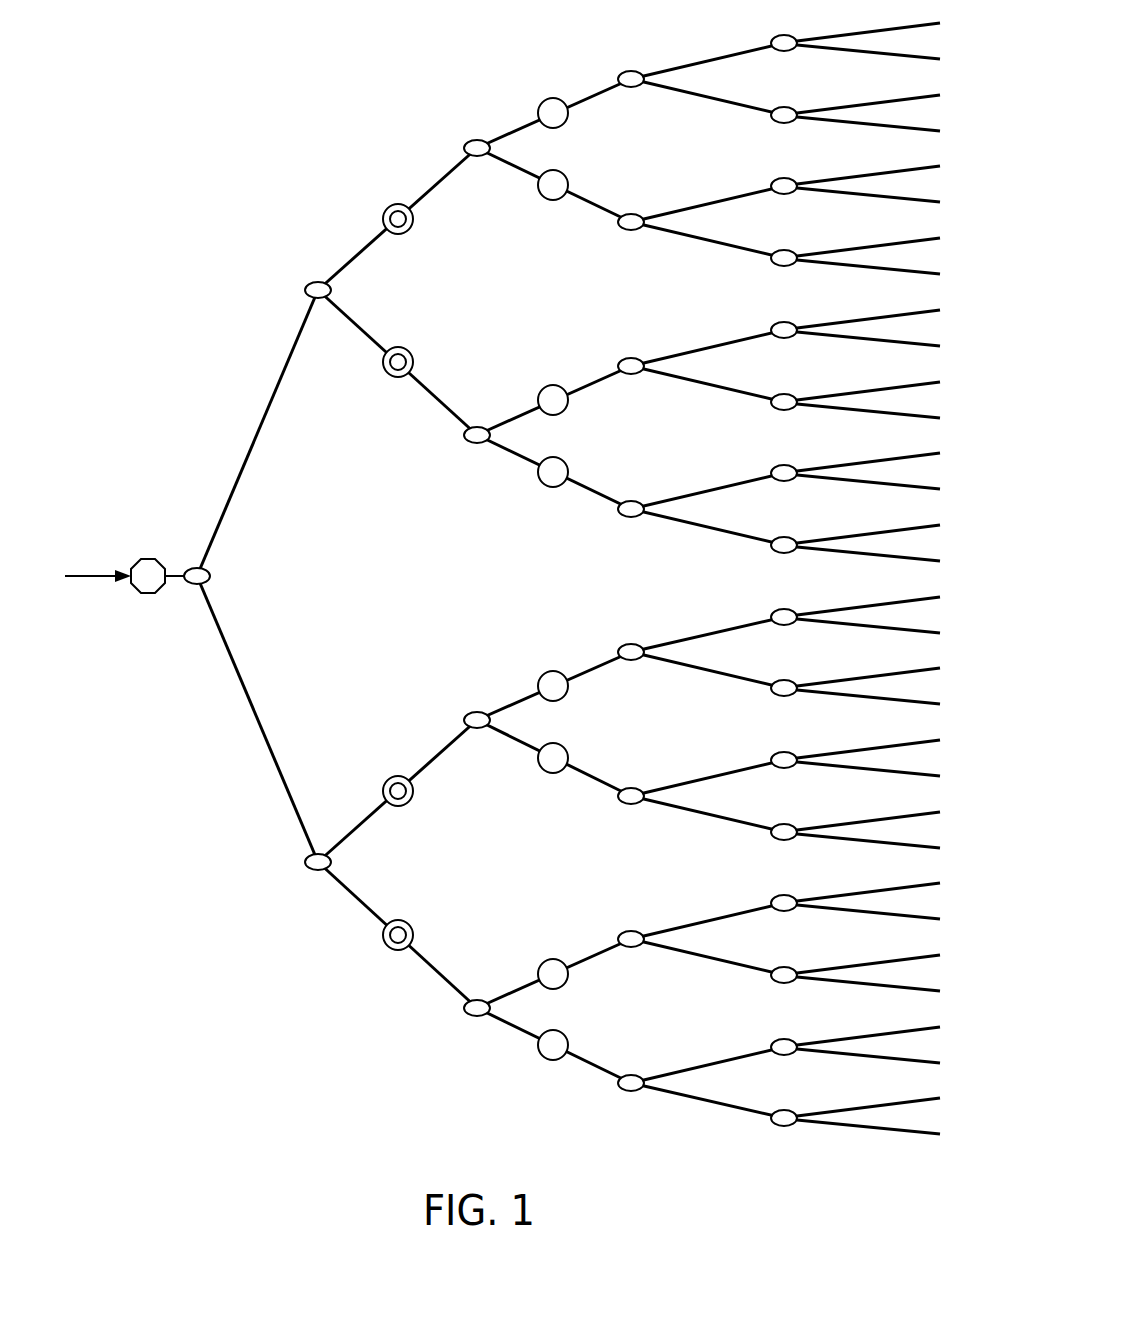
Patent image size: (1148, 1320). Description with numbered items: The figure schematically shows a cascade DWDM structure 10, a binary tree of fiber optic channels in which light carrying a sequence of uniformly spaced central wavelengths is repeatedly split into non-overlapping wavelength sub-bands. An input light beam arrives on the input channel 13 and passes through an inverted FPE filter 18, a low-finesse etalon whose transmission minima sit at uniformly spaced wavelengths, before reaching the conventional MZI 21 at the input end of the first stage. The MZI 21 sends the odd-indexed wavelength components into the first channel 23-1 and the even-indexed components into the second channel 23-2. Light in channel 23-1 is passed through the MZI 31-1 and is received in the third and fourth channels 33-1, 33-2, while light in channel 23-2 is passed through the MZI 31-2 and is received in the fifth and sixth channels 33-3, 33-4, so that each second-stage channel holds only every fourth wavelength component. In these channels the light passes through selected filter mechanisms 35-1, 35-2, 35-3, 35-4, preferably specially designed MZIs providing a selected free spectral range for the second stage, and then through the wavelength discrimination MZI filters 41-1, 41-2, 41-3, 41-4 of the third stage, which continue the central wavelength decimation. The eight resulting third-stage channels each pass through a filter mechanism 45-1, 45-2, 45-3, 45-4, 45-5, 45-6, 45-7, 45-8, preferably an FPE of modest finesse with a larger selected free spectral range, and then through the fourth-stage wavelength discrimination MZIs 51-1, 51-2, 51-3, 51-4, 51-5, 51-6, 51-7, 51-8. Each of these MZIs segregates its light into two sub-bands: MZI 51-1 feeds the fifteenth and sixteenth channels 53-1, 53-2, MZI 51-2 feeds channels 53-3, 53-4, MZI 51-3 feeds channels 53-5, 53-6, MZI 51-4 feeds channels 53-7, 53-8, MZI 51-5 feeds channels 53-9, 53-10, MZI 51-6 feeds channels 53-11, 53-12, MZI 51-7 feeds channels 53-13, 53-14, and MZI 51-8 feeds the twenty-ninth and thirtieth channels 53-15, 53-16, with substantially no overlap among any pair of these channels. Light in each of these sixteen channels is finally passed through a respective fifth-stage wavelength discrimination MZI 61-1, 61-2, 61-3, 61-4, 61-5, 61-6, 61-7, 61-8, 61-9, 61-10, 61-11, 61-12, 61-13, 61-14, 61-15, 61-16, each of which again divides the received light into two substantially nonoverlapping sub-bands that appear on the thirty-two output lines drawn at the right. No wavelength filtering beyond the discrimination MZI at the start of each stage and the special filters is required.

The cascade DWDM structure 10 is at (214, 180).
The input channel 13 is at (93, 581).
The inverted FPE filter 18 is at (148, 582).
The MZI 21 is at (211, 576).
The first channel 23-1 is at (258, 710).
The second channel 23-2 is at (258, 436).
The MZI 31-1 is at (320, 854).
The MZI 31-2 is at (318, 282).
The third channel 33-1 is at (442, 977).
The fourth channel 33-2 is at (440, 752).
The fifth channel 33-3 is at (433, 400).
The sixth channel 33-4 is at (440, 181).
The filter mechanism 35-1 is at (450, 910).
The filter mechanism 35-2 is at (413, 797).
The filter mechanism 35-3 is at (448, 335).
The filter mechanism 35-4 is at (405, 222).
The wavelength discrimination MZI filter 41-1 is at (477, 1000).
The wavelength discrimination MZI filter 41-2 is at (477, 712).
The wavelength discrimination MZI filter 41-3 is at (477, 427).
The wavelength discrimination MZI filter 41-4 is at (477, 140).
The filter mechanism 45-1 is at (553, 1048).
The filter mechanism 45-2 is at (553, 971).
The filter mechanism 45-3 is at (553, 761).
The filter mechanism 45-4 is at (553, 683).
The filter mechanism 45-5 is at (553, 475).
The filter mechanism 45-6 is at (553, 397).
The filter mechanism 45-7 is at (553, 188).
The filter mechanism 45-8 is at (553, 110).
The MZI 51-1 is at (631, 1083).
The MZI 51-2 is at (631, 939).
The MZI 51-3 is at (631, 796).
The MZI 51-4 is at (631, 652).
The MZI 51-5 is at (631, 509).
The MZI 51-6 is at (631, 366).
The MZI 51-7 is at (631, 222).
The MZI 51-8 is at (631, 79).
The fifteenth channel 53-1 is at (700, 1099).
The sixteenth channel 53-2 is at (703, 1066).
The seventeenth channel 53-3 is at (700, 955).
The eighteenth channel 53-4 is at (703, 922).
The nineteenth channel 53-5 is at (700, 812).
The twentieth channel 53-6 is at (703, 779).
The twenty-first channel 53-7 is at (700, 668).
The twenty-second channel 53-8 is at (703, 636).
The twenty-third channel 53-9 is at (700, 525).
The twenty-fourth channel 53-10 is at (703, 492).
The twenty-fifth channel 53-11 is at (700, 382).
The twenty-sixth channel 53-12 is at (703, 349).
The twenty-seventh channel 53-13 is at (700, 238).
The twenty-eighth channel 53-14 is at (703, 205).
The twenty-ninth channel 53-15 is at (700, 95).
The thirtieth channel 53-16 is at (703, 62).
The wavelength discrimination MZI 61-1 is at (784, 1118).
The wavelength discrimination MZI 61-2 is at (784, 1047).
The wavelength discrimination MZI 61-3 is at (784, 975).
The wavelength discrimination MZI 61-4 is at (784, 903).
The wavelength discrimination MZI 61-5 is at (784, 832).
The wavelength discrimination MZI 61-6 is at (784, 760).
The wavelength discrimination MZI 61-7 is at (784, 688).
The wavelength discrimination MZI 61-8 is at (784, 617).
The wavelength discrimination MZI 61-9 is at (784, 545).
The wavelength discrimination MZI 61-10 is at (784, 473).
The wavelength discrimination MZI 61-11 is at (784, 402).
The wavelength discrimination MZI 61-12 is at (784, 330).
The wavelength discrimination MZI 61-13 is at (784, 258).
The wavelength discrimination MZI 61-14 is at (784, 186).
The wavelength discrimination MZI 61-15 is at (784, 115).
The wavelength discrimination MZI 61-16 is at (784, 43).